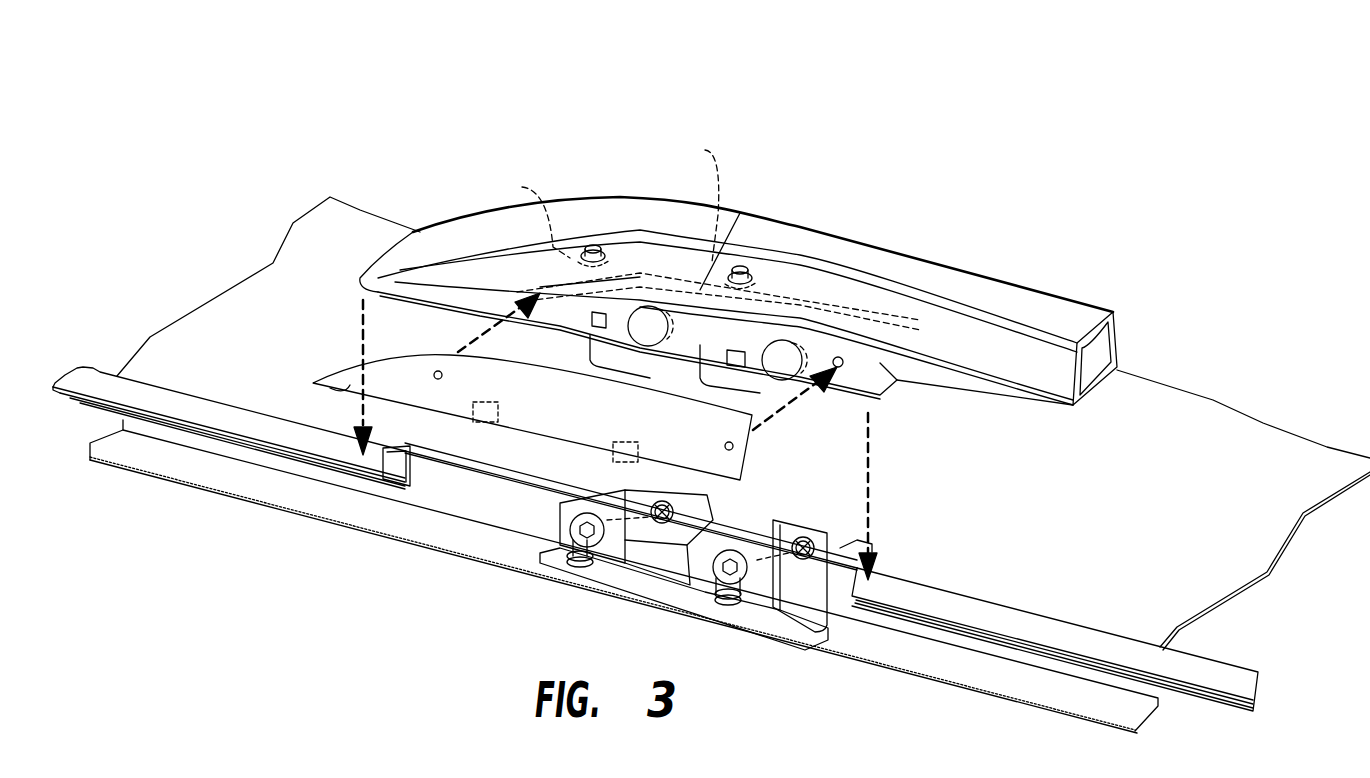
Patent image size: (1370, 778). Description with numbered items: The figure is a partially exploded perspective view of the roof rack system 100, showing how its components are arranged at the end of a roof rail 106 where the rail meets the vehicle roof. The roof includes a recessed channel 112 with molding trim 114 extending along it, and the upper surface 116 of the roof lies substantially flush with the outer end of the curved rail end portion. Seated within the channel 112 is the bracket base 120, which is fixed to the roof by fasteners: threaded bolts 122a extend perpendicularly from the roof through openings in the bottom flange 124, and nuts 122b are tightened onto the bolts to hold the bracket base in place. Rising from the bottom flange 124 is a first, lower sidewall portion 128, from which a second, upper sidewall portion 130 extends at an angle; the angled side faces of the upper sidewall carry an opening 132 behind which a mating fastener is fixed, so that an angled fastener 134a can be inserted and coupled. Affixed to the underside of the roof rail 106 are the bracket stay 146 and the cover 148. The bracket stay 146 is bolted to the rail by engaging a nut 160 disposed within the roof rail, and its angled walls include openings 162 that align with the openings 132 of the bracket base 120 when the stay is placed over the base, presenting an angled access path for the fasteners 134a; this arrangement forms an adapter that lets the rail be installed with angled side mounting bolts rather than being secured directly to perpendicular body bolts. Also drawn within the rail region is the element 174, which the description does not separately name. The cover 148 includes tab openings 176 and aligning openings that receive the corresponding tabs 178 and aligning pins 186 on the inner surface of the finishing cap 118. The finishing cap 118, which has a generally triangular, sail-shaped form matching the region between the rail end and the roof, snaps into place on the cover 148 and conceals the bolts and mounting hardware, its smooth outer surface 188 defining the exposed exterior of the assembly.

The roof rack system 100 is at (285, 92).
The roof rail 106 is at (1055, 290).
The channel 112 is at (443, 533).
The molding trim 114 is at (105, 372).
The upper surface 116 is at (1263, 447).
The finishing cap 118 is at (343, 366).
The bracket base 120 is at (778, 500).
The threaded bolt 122a is at (568, 577).
The nut 122b is at (563, 530).
The bottom flange 124 is at (773, 615).
The first, lower sidewall portion 128 is at (810, 607).
The second, upper sidewall portion 130 is at (840, 548).
The opening 132 is at (663, 485).
The fastener 134a is at (562, 523).
The bracket stay 146 is at (785, 291).
The cover 148 is at (890, 395).
The nut 160 is at (603, 199).
The opening 162 is at (652, 270).
The fastener 174 is at (640, 303).
The tab opening 176 is at (593, 323).
The tab 178 is at (487, 400).
The aligning pin 186 is at (727, 442).
The outer surface 188 is at (350, 380).